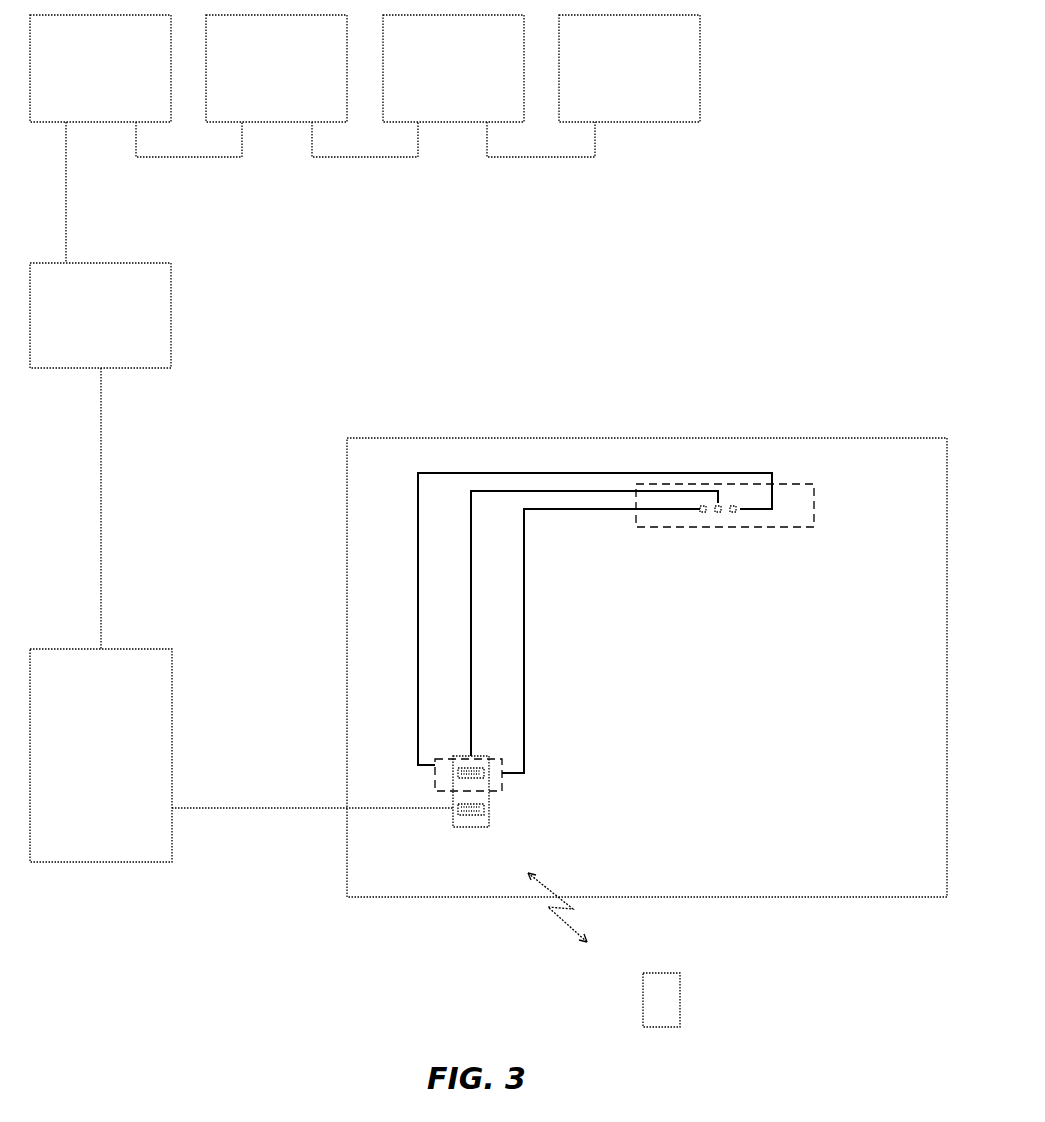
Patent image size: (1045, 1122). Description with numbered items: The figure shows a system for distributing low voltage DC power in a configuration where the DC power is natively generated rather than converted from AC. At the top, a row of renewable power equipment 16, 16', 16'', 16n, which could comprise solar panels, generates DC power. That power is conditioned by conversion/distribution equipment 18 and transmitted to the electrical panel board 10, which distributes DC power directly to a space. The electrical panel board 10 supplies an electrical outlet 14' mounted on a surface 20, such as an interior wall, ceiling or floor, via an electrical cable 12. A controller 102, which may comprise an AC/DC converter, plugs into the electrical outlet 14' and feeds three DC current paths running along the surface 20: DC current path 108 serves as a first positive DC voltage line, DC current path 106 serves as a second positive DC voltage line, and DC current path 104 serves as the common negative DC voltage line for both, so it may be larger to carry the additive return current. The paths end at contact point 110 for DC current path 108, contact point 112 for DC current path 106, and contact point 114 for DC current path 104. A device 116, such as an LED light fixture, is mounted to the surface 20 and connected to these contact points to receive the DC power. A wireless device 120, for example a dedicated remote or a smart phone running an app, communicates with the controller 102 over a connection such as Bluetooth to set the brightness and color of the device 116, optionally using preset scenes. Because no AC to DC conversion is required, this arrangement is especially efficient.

The electrical panel board 10 is at (145, 649).
The electrical cable 12 is at (267, 808).
The electrical outlet 14' is at (505, 802).
The renewable power equipment 16 is at (100, 109).
The renewable power equipment 16' is at (276, 109).
The renewable power equipment 16'' is at (453, 109).
The renewable power equipment 16n is at (664, 122).
The conversion/distribution equipment 18 is at (171, 307).
The surface 20 is at (370, 476).
The controller 102 is at (502, 783).
The DC current path 104 is at (418, 568).
The DC current path 106 is at (494, 535).
The DC current path 108 is at (524, 587).
The contact point 110 is at (702, 513).
The contact point 112 is at (717, 513).
The contact point 114 is at (735, 513).
The device 116 is at (814, 510).
The wireless device 120 is at (680, 997).